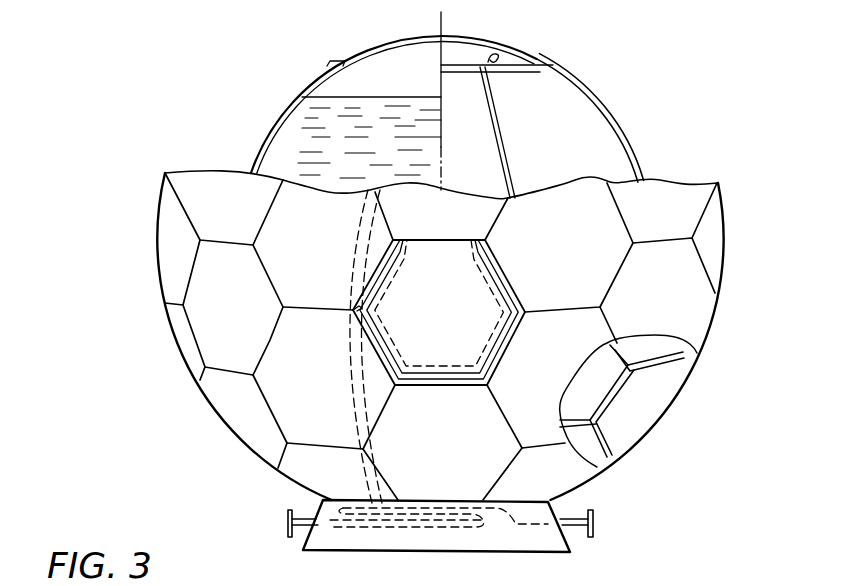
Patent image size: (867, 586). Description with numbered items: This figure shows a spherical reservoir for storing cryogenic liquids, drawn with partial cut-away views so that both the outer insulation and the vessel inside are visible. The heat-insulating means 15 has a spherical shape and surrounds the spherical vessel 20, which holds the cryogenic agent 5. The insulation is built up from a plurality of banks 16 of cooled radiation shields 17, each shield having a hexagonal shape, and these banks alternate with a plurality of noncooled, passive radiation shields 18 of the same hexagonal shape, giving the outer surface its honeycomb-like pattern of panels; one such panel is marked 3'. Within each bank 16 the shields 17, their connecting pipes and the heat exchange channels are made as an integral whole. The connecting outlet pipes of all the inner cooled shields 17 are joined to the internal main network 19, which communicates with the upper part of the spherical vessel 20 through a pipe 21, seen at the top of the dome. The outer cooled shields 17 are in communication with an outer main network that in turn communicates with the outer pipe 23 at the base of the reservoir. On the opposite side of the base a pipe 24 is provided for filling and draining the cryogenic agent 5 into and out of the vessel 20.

The panel 3' is at (724, 205).
The cryogenic agent 5 is at (313, 110).
The heat-insulating means 15 is at (693, 170).
The bank 16 is at (683, 352).
The cooled radiation shield 17 is at (432, 368).
The noncooled radiation shield 18 is at (655, 398).
The internal main network 19 is at (577, 100).
The spherical vessel 20 is at (272, 133).
The pipe 21 is at (496, 50).
The outer pipe 23 is at (597, 530).
The pipe 24 is at (287, 528).